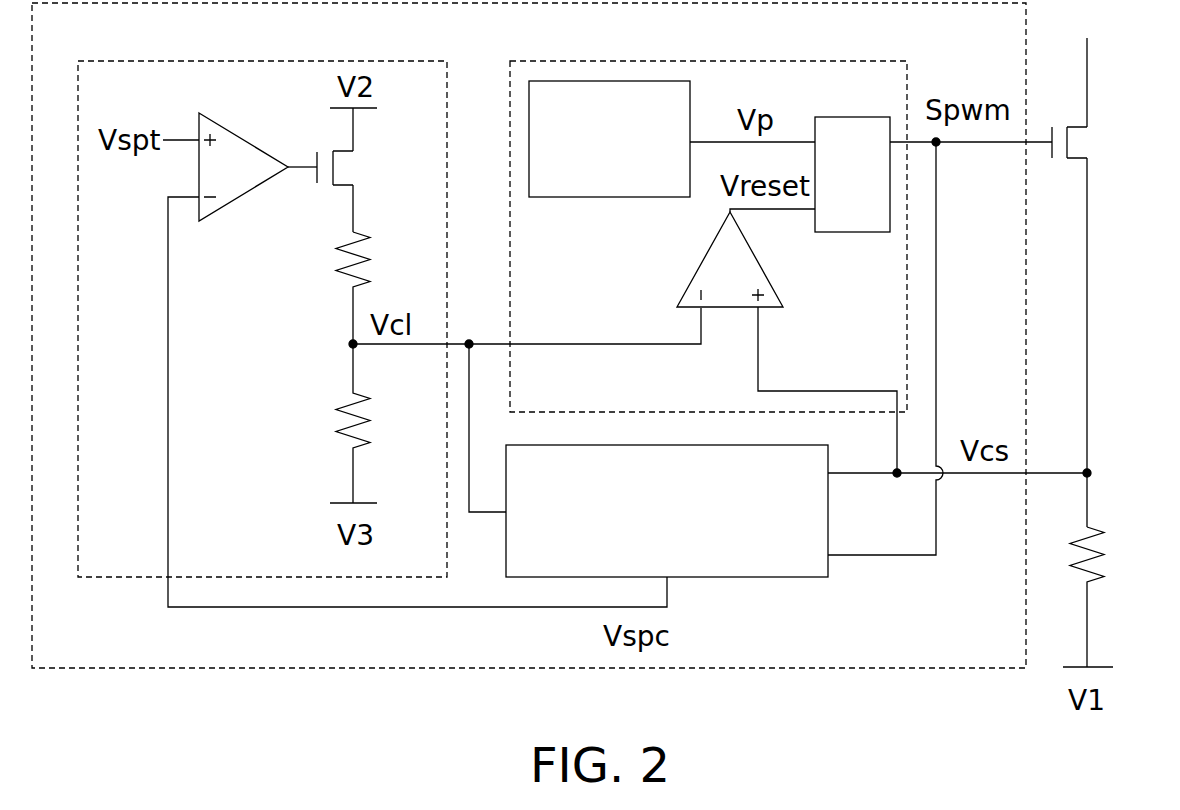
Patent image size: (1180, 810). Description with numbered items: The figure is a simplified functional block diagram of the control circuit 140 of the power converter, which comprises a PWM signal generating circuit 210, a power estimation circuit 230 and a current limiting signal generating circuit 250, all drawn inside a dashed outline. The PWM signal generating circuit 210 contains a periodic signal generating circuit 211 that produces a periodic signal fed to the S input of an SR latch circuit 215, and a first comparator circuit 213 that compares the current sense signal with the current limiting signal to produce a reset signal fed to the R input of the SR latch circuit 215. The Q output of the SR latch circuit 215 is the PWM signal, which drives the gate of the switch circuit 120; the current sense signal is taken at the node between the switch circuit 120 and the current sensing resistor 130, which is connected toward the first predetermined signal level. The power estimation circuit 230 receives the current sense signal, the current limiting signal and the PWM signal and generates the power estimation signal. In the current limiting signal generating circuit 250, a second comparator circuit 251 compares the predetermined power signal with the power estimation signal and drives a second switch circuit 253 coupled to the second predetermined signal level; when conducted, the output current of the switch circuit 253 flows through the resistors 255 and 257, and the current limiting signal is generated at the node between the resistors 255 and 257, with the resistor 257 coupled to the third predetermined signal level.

The control circuit 140 is at (828, 668).
The current limiting signal generating circuit 250 is at (348, 61).
The PWM signal generating circuit 210 is at (808, 61).
The second comparator circuit 251 is at (222, 125).
The second switch circuit 253 is at (365, 175).
The resistor 255 is at (365, 265).
The resistor 257 is at (368, 428).
The periodic signal generating circuit 211 is at (632, 197).
The first comparator circuit 213 is at (692, 273).
The SR latch circuit 215 is at (852, 232).
The power estimation circuit 230 is at (786, 577).
The switch circuit 120 is at (1100, 142).
The current sensing resistor 130 is at (1102, 558).